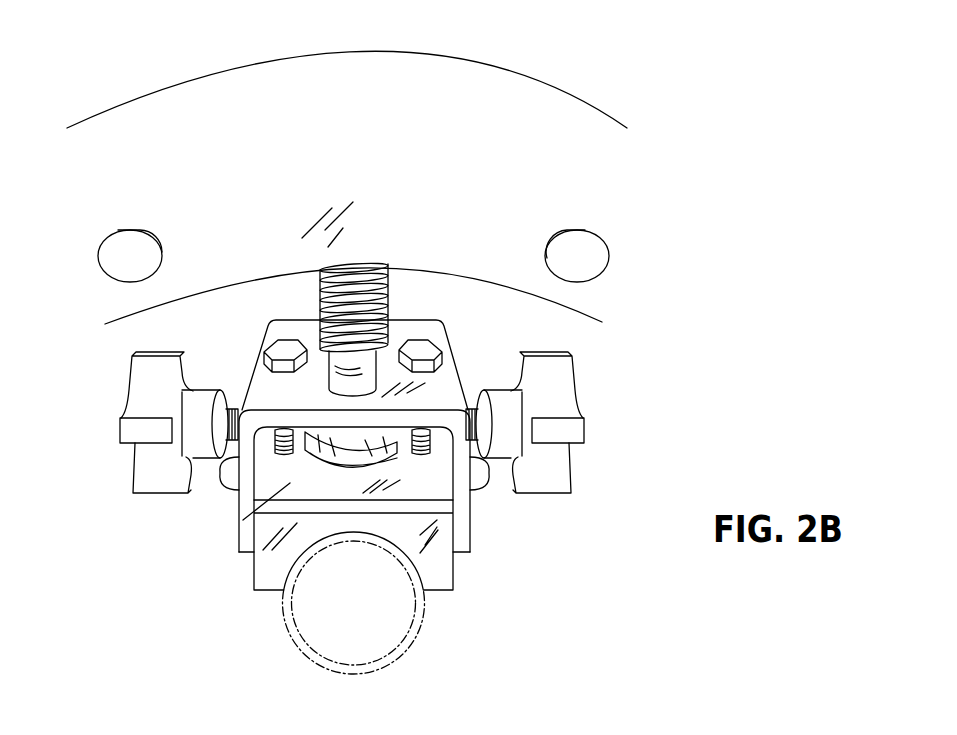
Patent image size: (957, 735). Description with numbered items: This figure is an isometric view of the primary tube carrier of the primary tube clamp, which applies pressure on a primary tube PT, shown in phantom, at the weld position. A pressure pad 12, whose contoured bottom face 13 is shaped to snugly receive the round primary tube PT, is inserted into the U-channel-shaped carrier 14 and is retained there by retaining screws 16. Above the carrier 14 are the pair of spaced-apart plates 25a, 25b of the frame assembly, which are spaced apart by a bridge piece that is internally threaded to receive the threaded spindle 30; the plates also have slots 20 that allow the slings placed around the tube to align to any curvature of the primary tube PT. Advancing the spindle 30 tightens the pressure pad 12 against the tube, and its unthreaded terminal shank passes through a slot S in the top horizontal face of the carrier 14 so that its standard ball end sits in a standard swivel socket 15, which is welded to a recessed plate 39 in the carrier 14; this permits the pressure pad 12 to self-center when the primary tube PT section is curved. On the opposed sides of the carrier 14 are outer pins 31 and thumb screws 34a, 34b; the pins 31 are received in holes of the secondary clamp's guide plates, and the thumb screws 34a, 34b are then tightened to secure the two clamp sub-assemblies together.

The plate 25a is at (493, 152).
The plate 25b is at (581, 248).
The spindle 30 is at (355, 283).
The slots 20 is at (152, 278).
The retaining screws 16 is at (281, 349).
The slot S is at (378, 357).
The thumb screw 34a is at (145, 392).
The thumb screw 34b is at (562, 395).
The swivel socket 15 is at (374, 445).
The pins 31 is at (230, 473).
The carrier 14 is at (460, 510).
The pressure pad 12 is at (443, 575).
The recessed plate 39 is at (243, 520).
The contoured bottom face 13 is at (286, 570).
The primary tube PT is at (407, 636).